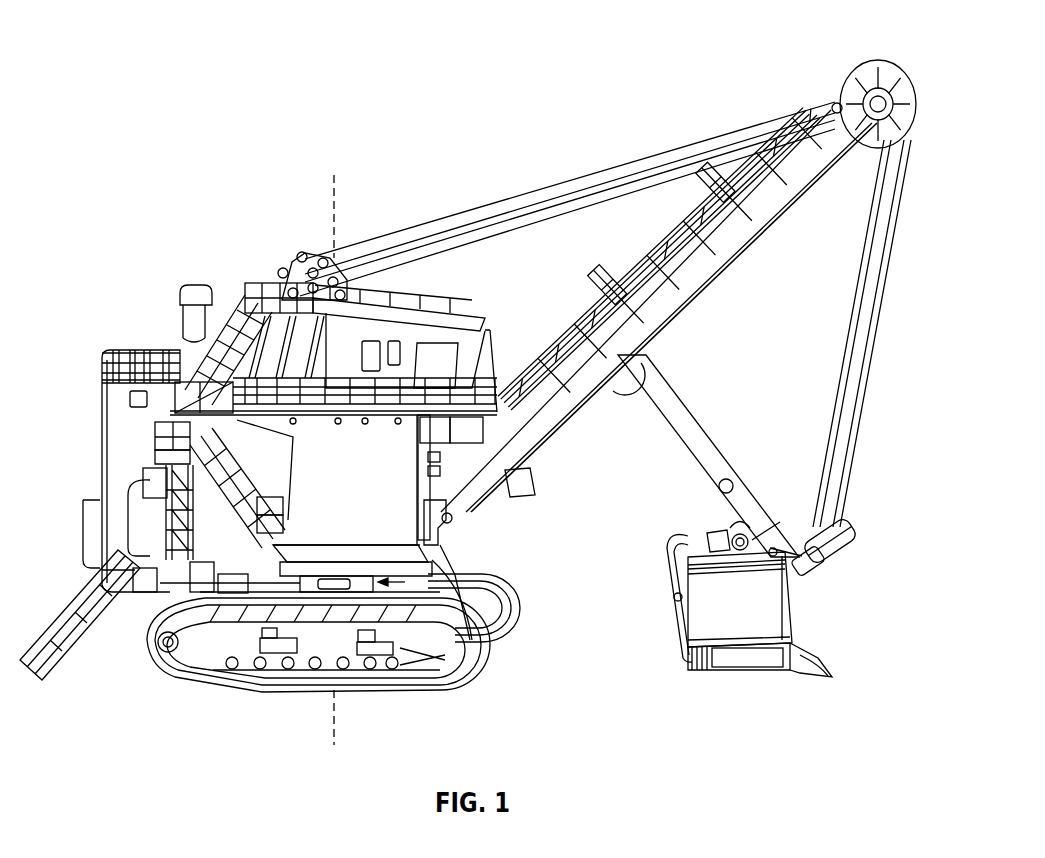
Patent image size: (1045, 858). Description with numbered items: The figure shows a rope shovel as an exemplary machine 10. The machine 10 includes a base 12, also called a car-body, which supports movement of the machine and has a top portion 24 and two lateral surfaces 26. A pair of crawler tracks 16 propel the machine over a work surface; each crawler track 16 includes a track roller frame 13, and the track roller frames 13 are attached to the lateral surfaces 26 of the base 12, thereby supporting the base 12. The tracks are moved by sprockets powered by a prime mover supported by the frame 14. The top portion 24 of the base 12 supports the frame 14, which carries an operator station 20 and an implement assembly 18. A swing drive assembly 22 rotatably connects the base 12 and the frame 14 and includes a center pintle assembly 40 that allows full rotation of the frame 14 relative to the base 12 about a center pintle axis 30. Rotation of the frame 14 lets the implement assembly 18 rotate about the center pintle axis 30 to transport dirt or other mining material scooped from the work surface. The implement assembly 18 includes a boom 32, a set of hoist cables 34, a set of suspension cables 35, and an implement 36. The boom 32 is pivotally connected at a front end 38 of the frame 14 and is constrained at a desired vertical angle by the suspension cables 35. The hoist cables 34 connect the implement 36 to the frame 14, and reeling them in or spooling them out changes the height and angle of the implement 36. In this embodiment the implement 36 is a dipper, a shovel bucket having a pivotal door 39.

The machine 10 is at (220, 151).
The base 12 is at (470, 673).
The track roller frame 13 is at (203, 658).
The frame 14 is at (95, 560).
The crawler tracks 16 is at (147, 637).
The implement assembly 18 is at (884, 308).
The operator station 20 is at (477, 313).
The swing drive assembly 22 is at (443, 567).
The top portion 24 is at (363, 562).
The lateral surfaces 26 is at (497, 640).
The center pintle axis 30 is at (334, 207).
The boom 32 is at (713, 273).
The hoist cables 34 is at (857, 373).
The suspension cables 35 is at (442, 215).
The implement 36 is at (792, 613).
The front end 38 is at (463, 517).
The pivotal door 39 is at (668, 560).
The center pintle assembly 40 is at (330, 556).